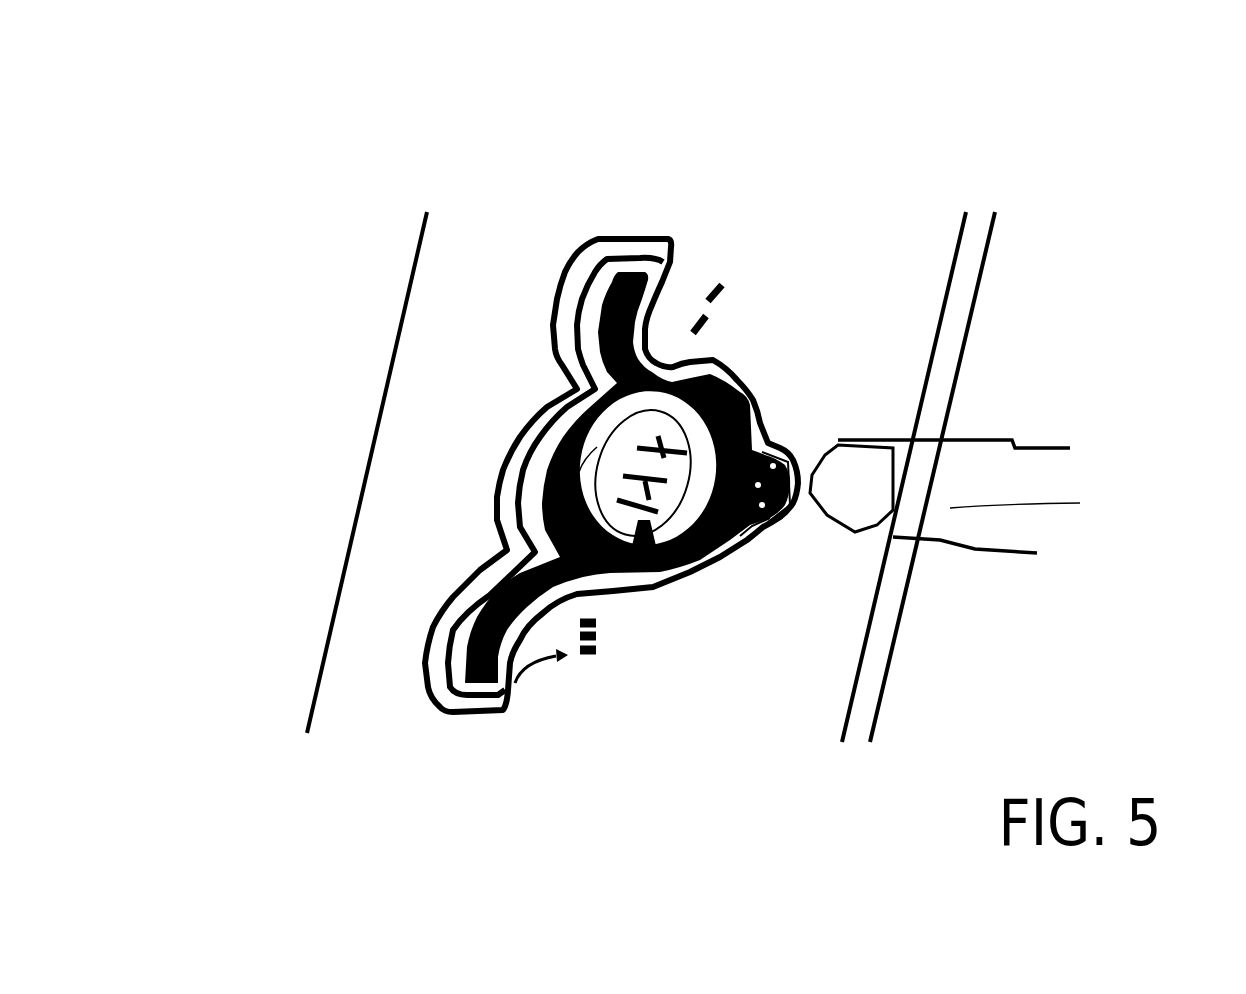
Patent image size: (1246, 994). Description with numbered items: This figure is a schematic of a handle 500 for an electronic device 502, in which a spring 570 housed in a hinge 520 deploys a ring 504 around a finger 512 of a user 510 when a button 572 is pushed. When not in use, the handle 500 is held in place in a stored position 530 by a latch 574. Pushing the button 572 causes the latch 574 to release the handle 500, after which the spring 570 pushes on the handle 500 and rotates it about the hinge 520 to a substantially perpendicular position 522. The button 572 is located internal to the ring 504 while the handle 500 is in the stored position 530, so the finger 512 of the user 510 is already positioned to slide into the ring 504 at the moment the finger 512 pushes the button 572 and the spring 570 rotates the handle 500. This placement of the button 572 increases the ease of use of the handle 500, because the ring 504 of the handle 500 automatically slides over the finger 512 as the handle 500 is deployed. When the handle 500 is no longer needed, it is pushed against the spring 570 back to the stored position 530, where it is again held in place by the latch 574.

The handle 500 is at (302, 209).
The electronic device 502 is at (870, 285).
The ring 504 is at (585, 421).
The user 510 is at (1103, 565).
The finger 512 is at (950, 508).
The hinge 520 is at (783, 518).
The substantially perpendicular position 522 is at (588, 674).
The stored position 530 is at (476, 724).
The spring 570 is at (787, 447).
The button 572 is at (678, 463).
The latch 574 is at (588, 502).